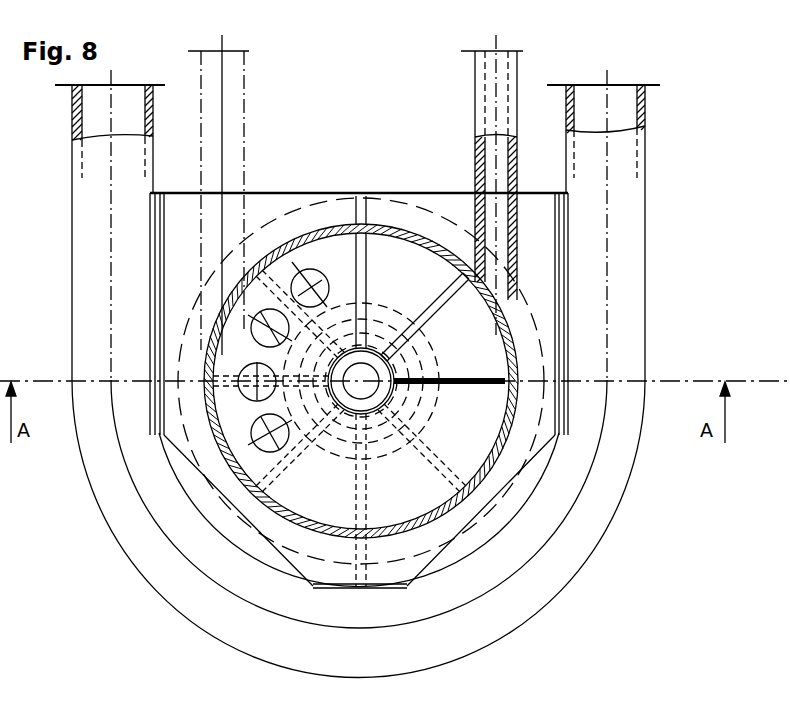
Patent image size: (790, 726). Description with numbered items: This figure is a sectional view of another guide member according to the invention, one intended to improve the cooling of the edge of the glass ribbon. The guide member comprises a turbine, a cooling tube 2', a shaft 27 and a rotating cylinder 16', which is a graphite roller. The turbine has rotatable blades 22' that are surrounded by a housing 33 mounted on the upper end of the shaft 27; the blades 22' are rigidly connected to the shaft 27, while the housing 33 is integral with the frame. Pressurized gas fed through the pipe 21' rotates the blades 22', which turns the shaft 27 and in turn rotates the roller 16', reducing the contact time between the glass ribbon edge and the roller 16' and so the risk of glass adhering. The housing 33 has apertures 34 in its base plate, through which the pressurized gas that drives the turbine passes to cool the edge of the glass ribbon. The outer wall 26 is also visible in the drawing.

The cooling tube 2' is at (357, 349).
The rotating cylinder 16' is at (421, 390).
The pipe 21' is at (472, 185).
The rotatable blades 22' is at (425, 224).
The outer wall 26 is at (122, 517).
The shaft 27 is at (364, 366).
The housing 33 is at (430, 538).
The apertures 34 is at (256, 427).